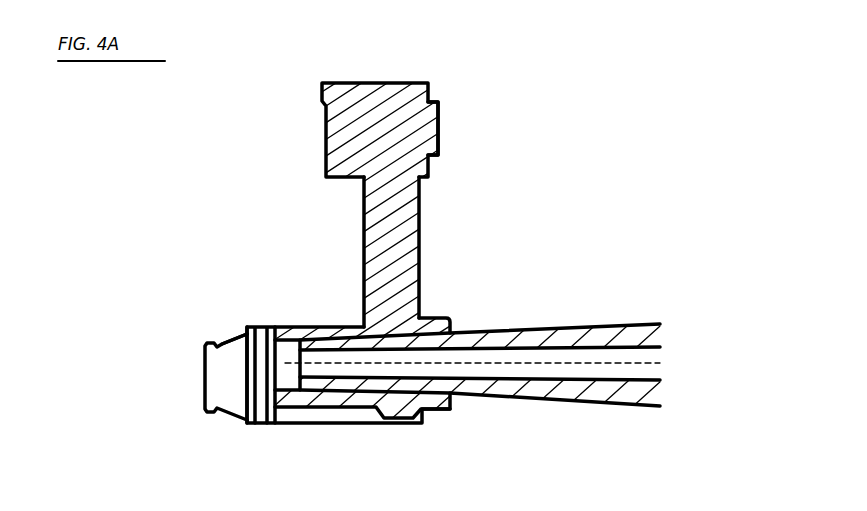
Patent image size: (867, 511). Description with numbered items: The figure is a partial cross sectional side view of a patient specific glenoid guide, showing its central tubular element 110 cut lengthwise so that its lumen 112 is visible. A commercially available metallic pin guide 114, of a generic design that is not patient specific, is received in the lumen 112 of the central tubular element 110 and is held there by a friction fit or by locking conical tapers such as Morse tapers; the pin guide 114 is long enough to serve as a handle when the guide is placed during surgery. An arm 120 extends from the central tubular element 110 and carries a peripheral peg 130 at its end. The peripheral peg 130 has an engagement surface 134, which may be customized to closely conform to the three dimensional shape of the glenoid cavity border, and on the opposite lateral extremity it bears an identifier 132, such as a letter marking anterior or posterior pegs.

The central tubular element 110 is at (297, 324).
The lumen 112 is at (240, 338).
The pin guide 114 is at (570, 323).
The arm 120 is at (428, 236).
The peripheral peg 130 is at (387, 82).
The identifier 132 is at (435, 117).
The engagement surface 134 is at (226, 419).